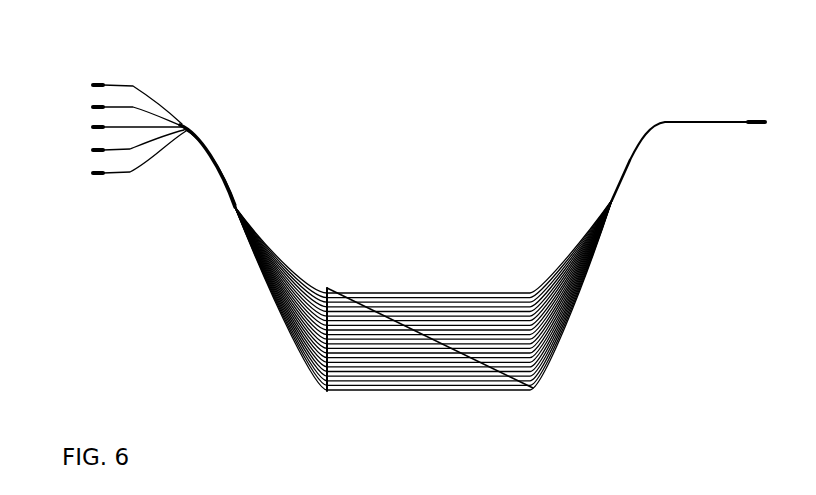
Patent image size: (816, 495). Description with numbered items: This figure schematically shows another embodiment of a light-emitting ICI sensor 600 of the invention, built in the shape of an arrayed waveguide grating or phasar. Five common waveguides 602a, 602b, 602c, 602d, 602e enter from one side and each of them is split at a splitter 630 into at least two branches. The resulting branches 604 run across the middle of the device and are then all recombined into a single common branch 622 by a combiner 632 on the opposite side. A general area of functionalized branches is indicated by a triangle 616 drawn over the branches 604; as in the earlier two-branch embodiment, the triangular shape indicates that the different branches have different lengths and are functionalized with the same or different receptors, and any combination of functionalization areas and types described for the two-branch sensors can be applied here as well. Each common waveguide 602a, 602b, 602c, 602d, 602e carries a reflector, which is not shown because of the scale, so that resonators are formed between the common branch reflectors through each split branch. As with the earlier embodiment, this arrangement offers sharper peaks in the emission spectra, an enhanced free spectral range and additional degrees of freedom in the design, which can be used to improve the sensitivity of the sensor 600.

The light-emitting ICI sensor 600 is at (638, 401).
The common waveguide 602a is at (95, 85).
The common waveguide 602b is at (93, 107).
The common waveguide 602c is at (93, 127).
The common waveguide 602d is at (93, 151).
The common waveguide 602e is at (95, 174).
The branches 604 is at (432, 294).
The triangle 616 is at (401, 360).
The common branch 622 is at (688, 122).
The splitter 630 is at (235, 208).
The combiner 632 is at (604, 224).